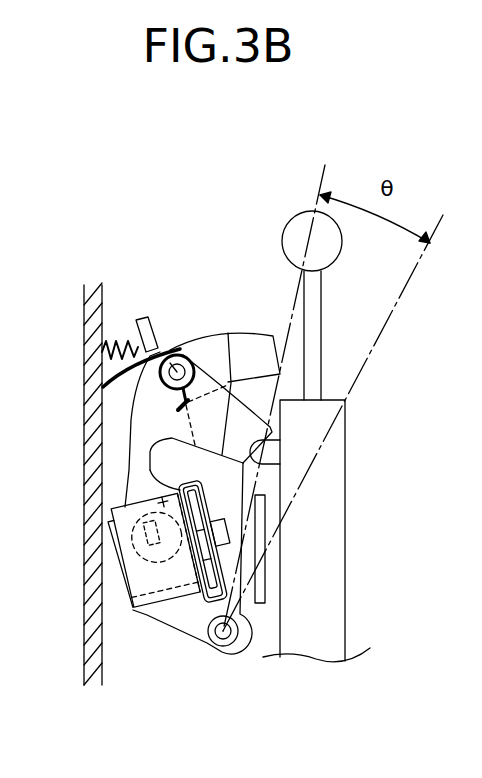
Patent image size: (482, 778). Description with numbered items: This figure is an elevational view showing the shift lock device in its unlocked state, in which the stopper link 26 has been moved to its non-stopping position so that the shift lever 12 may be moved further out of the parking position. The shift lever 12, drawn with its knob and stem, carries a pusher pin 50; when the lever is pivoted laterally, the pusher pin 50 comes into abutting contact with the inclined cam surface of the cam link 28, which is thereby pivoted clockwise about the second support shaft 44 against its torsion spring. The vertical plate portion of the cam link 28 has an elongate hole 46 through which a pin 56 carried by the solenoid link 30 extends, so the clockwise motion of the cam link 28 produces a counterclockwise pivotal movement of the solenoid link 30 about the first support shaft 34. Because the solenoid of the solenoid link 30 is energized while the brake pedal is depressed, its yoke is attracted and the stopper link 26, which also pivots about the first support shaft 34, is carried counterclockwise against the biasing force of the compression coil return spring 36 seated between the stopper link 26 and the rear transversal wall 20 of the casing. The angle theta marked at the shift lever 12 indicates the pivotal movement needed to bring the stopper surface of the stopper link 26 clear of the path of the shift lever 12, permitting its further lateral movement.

The shift lever 12 is at (293, 240).
The transversal wall 20 is at (90, 647).
The stopper link 26 is at (236, 303).
The cam link 28 is at (113, 433).
The solenoid link 30 is at (158, 659).
The first support shaft 34 is at (223, 631).
The compression coil return spring 36 is at (118, 345).
The second support shaft 44 is at (170, 343).
The elongate hole 46 is at (150, 503).
The pusher pin 50 is at (272, 452).
The pin 56 is at (152, 532).